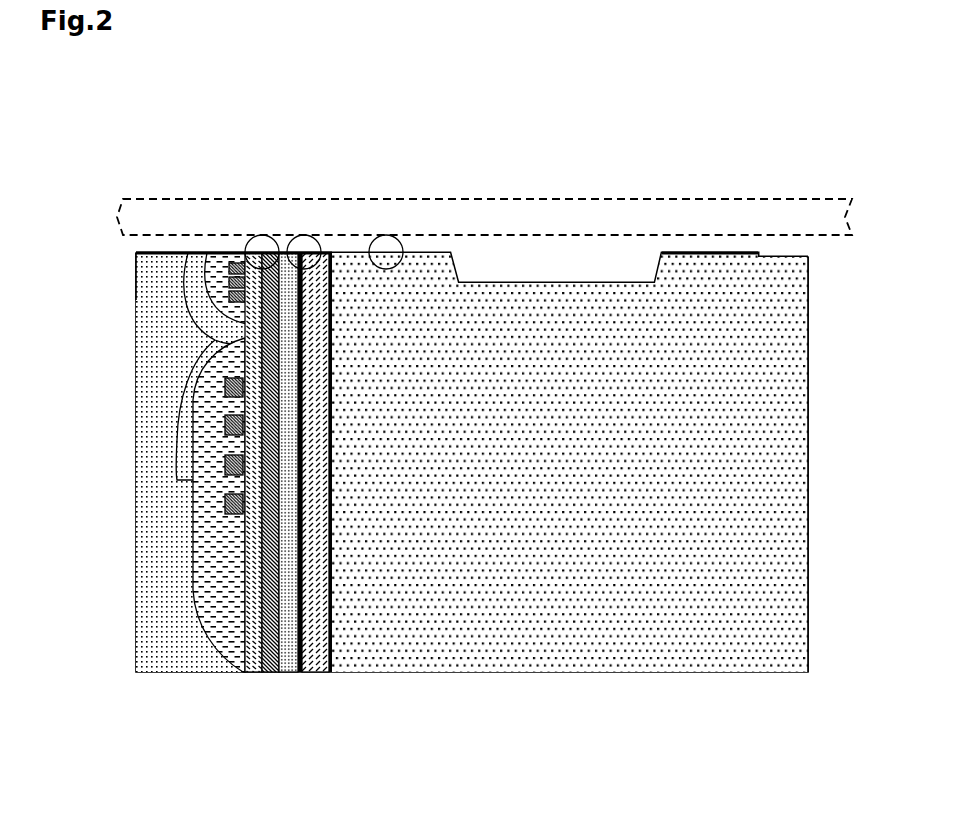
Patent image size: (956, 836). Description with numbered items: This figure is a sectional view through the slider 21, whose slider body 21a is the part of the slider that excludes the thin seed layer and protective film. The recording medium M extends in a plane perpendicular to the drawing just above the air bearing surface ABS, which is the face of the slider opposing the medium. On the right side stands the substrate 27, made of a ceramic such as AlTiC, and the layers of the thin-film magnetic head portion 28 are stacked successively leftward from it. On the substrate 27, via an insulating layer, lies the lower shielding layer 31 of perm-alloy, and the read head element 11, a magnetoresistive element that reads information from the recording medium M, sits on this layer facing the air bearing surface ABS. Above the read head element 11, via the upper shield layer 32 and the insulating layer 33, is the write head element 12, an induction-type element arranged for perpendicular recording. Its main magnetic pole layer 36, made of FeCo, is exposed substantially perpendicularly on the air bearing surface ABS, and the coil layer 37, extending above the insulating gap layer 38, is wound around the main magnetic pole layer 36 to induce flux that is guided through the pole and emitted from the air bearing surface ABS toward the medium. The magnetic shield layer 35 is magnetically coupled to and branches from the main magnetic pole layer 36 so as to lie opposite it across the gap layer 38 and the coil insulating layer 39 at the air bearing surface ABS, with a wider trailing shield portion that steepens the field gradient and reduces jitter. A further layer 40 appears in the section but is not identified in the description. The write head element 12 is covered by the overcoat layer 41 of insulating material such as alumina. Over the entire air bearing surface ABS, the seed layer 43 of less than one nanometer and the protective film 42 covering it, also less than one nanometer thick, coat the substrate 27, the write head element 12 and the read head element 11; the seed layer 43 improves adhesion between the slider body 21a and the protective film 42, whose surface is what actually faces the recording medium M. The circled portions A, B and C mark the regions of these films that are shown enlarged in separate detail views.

The slider 21 is at (493, 138).
The slider body 21a is at (815, 257).
The substrate 27 is at (801, 738).
The thin-film magnetic head portion 28 is at (133, 738).
The write head element 12 is at (247, 154).
The read head element 11 is at (302, 250).
The lower shielding layer 31 is at (317, 662).
The upper shield layer 32 is at (288, 660).
The insulating layer 33 is at (270, 658).
The magnetic shield layer 35 is at (190, 310).
The main magnetic pole layer 36 is at (244, 275).
The coil layer 37 is at (205, 393).
The gap layer 38 is at (250, 597).
The coil insulating layer 39 is at (213, 283).
The insulating layer 40 is at (200, 555).
The overcoat layer 41 is at (150, 645).
The protective film 42 is at (137, 253).
The seed layer 43 is at (137, 257).
The portion A is at (258, 225).
The portion B is at (312, 225).
The portion C is at (405, 230).
The recording medium M is at (558, 203).
The air bearing surface ABS is at (685, 253).